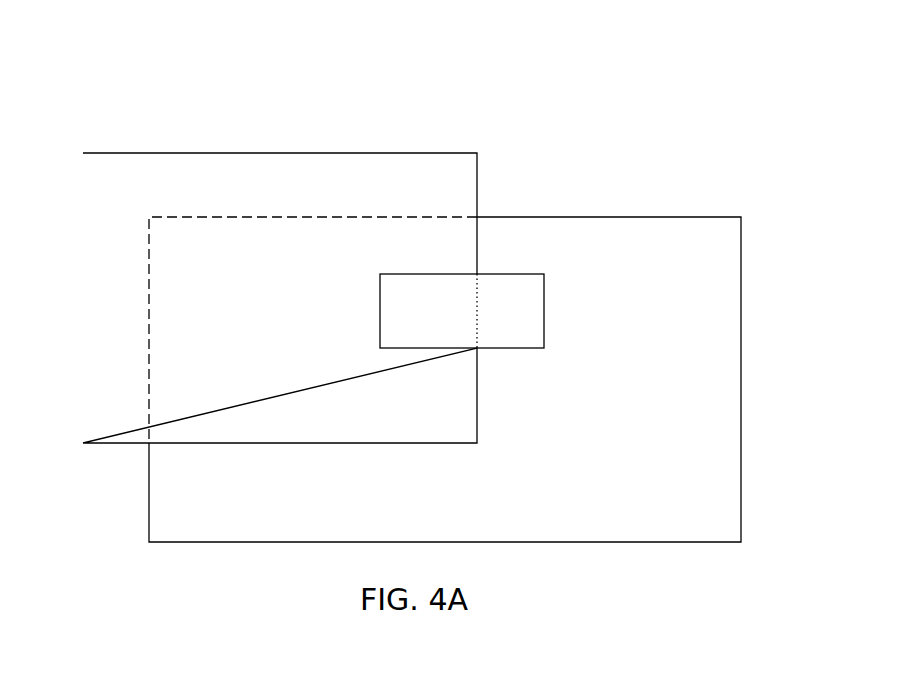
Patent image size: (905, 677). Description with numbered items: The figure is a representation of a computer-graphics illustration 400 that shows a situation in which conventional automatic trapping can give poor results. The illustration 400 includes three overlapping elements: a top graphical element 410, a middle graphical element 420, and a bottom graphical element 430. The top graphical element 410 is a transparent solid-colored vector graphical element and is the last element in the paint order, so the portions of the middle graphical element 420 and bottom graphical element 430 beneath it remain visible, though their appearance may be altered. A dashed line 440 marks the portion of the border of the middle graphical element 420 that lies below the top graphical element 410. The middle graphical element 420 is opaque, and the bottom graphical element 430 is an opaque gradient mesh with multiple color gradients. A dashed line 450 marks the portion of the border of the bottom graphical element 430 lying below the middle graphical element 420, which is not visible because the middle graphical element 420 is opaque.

The illustration 400 is at (474, 82).
The top graphical element 410 is at (528, 272).
The middle graphical element 420 is at (330, 153).
The bottom graphical element 430 is at (742, 305).
The dashed line 440 is at (481, 280).
The dashed line 450 is at (148, 305).